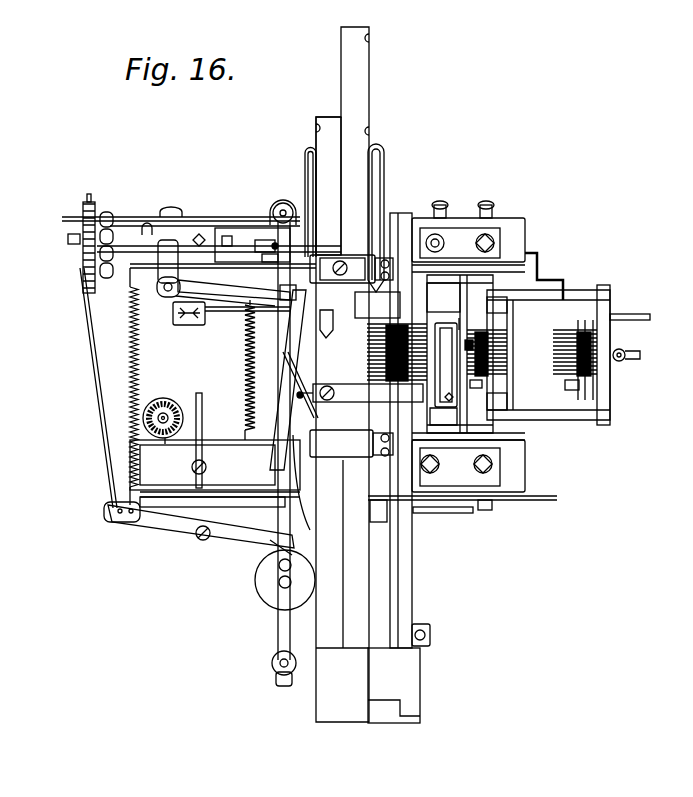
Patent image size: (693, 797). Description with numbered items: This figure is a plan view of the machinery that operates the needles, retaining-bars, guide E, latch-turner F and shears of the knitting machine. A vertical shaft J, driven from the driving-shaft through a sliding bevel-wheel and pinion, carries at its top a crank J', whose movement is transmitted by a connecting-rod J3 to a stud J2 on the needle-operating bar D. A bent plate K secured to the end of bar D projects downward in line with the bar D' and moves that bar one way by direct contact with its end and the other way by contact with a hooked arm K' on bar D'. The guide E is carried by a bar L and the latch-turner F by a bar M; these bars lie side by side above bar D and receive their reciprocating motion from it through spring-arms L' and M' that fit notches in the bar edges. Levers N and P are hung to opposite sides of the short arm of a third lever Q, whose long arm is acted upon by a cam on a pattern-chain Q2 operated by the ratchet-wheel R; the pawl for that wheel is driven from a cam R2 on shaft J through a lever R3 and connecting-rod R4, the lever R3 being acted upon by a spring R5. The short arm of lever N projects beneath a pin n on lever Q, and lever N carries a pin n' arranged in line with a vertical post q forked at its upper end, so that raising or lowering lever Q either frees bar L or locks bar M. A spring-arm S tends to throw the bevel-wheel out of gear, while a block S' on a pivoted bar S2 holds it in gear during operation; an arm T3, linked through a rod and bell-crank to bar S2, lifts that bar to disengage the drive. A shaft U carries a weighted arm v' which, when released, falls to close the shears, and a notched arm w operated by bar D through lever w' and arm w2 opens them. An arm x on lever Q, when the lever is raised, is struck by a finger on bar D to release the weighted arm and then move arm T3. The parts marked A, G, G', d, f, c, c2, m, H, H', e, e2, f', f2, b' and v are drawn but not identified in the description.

The bar M is at (371, 374).
The bar L is at (328, 308).
The spring-arm L' is at (297, 202).
The spring-arm M' is at (389, 218).
The bar D' is at (396, 430).
The needle-operating bar D is at (342, 669).
The bent plate K is at (394, 685).
The hooked arm K' is at (430, 661).
The lever P is at (342, 352).
The latch-turner F is at (377, 305).
The shaft U is at (326, 324).
The guide E is at (361, 393).
The frame bar A is at (346, 354).
The box G is at (460, 354).
The plate G' is at (446, 365).
The bracket d is at (443, 416).
The rod f is at (453, 320).
The coil c is at (491, 353).
The bracket c2 is at (482, 386).
The contact m is at (443, 351).
The magnet frame H is at (548, 355).
The plate H' is at (612, 355).
The coil e is at (566, 353).
The bracket e2 is at (572, 390).
The rod f' is at (633, 315).
The pivot f2 is at (630, 355).
The spring-arm S is at (462, 514).
The block S' is at (379, 517).
The pivoted bar S2 is at (506, 511).
The lever N is at (201, 242).
The pin n is at (241, 245).
The pin n' is at (261, 237).
The vertical post q is at (270, 240).
The part b' is at (270, 263).
The lever Q is at (159, 245).
The ratchet-wheel R is at (76, 237).
The pattern-chain Q2 is at (108, 235).
The connecting-rod R4 is at (93, 388).
The spring R5 is at (144, 386).
The lever R3 is at (199, 529).
The cam R2 is at (264, 558).
The arm x is at (223, 291).
The arm v' is at (231, 317).
The arm T3 is at (306, 291).
The stud J2 is at (282, 204).
The crank J' is at (272, 454).
The vertical shaft J is at (273, 583).
The connecting-rod J3 is at (272, 346).
The notched arm w is at (300, 376).
The arm w2 is at (304, 385).
The lever w' is at (301, 482).
The disc v is at (174, 440).